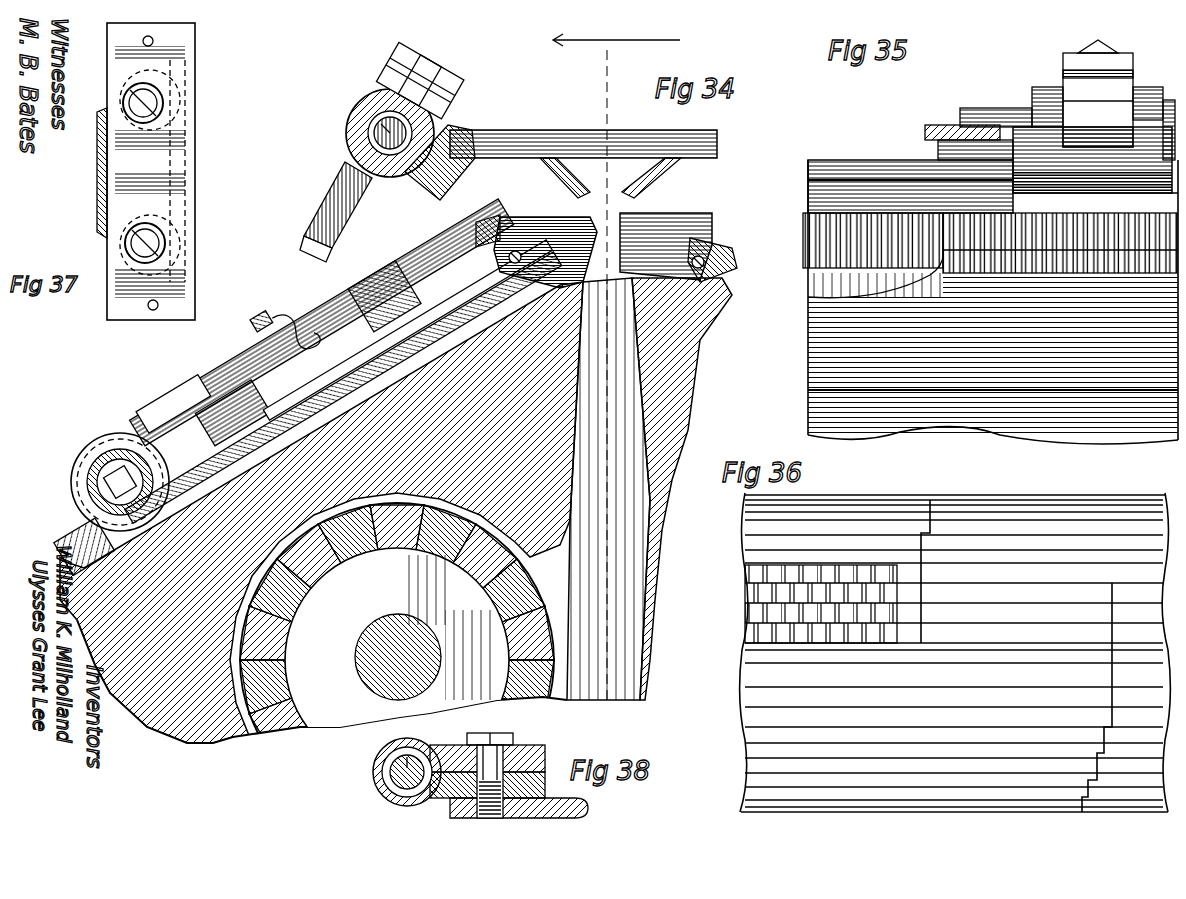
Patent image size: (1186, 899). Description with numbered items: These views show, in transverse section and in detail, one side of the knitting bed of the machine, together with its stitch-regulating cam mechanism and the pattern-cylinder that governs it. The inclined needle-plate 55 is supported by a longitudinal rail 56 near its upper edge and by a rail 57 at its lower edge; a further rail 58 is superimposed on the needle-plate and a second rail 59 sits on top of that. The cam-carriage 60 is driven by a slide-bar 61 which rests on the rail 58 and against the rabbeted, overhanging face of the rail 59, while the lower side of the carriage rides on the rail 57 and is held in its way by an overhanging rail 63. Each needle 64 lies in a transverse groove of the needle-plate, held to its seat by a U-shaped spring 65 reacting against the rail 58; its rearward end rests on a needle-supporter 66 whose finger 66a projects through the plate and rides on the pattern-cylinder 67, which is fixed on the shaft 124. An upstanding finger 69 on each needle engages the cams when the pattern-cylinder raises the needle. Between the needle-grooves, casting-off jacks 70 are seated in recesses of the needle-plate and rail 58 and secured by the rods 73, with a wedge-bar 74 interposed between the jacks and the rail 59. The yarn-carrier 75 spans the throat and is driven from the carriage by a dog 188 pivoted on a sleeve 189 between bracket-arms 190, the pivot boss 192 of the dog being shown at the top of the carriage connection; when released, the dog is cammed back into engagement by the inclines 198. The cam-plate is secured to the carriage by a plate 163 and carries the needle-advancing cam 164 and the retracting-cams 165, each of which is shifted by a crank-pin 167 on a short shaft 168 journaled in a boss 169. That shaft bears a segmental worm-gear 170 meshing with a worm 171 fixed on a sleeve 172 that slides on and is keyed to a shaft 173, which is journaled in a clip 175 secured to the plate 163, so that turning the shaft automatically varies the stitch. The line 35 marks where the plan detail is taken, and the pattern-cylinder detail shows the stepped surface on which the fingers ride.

In FIG. 34, the section line 35 is at (616, 367).
In FIG. 34, the needle-plate 55 is at (555, 285).
In FIG. 35, the needle-plate 55 is at (812, 302).
In FIG. 35, the longitudinal rail 56 is at (795, 367).
In FIG. 36, the longitudinal rail 56 is at (955, 652).
In FIG. 34, the longitudinal rail 57 is at (200, 735).
In FIG. 34, the longitudinal rail 58 is at (737, 253).
In FIG. 34, the second longitudinal rail 59 is at (322, 322).
In FIG. 35, the second longitudinal rail 59 is at (878, 168).
In FIG. 34, the cam-carriage 60 is at (312, 290).
In FIG. 34, the slide-bar 61 is at (380, 297).
In FIG. 34, the rail 63 is at (80, 560).
In FIG. 34, the needle 64 is at (455, 300).
In FIG. 34, the U-shaped spring 65 is at (440, 367).
In FIG. 34, the needle-supporter 66 is at (283, 657).
In FIG. 34, the finger 66a is at (397, 660).
In FIG. 34, the pattern-cylinder 67 is at (743, 697).
In FIG. 34, the upstanding finger 69 is at (272, 653).
In FIG. 34, the casting-off jack 70 is at (634, 214).
In FIG. 35, the casting-off jack 70 is at (1152, 276).
In FIG. 34, the rod 73 is at (517, 253).
In FIG. 34, the wedge-bar 74 is at (493, 217).
In FIG. 34, the yarn-carrier 75 is at (717, 146).
In FIG. 35, the yarn-carrier 75 is at (930, 136).
In FIG. 34, the shaft 124 is at (433, 659).
In FIG. 37, the plate 163 is at (197, 256).
In FIG. 37, the needle-advancing cam 164 is at (97, 170).
In FIG. 37, the retracting-cam 165 is at (195, 70).
In FIG. 37, the crank-pin 167 is at (150, 175).
In FIG. 34, the crank-pin 167 is at (347, 558).
In FIG. 34, the short shaft 168 is at (232, 413).
In FIG. 34, the boss 169 is at (295, 338).
In FIG. 34, the segmental worm-gear 170 is at (167, 437).
In FIG. 34, the worm 171 is at (110, 443).
In FIG. 34, the sleeve 172 is at (110, 457).
In FIG. 38, the sleeve 172 is at (443, 746).
In FIG. 34, the shaft 173 is at (93, 478).
In FIG. 38, the shaft 173 is at (374, 786).
In FIG. 38, the clip 175 is at (374, 760).
In FIG. 34, the dog 188 is at (343, 180).
In FIG. 35, the dog 188 is at (1075, 77).
In FIG. 34, the sleeve 189 is at (385, 125).
In FIG. 35, the sleeve 189 is at (1011, 101).
In FIG. 34, the bracket-arm 190 is at (425, 172).
In FIG. 35, the bracket-arm 190 is at (1148, 96).
In FIG. 34, the pivot boss 192 is at (373, 128).
In FIG. 34, the incline 198 is at (347, 230).